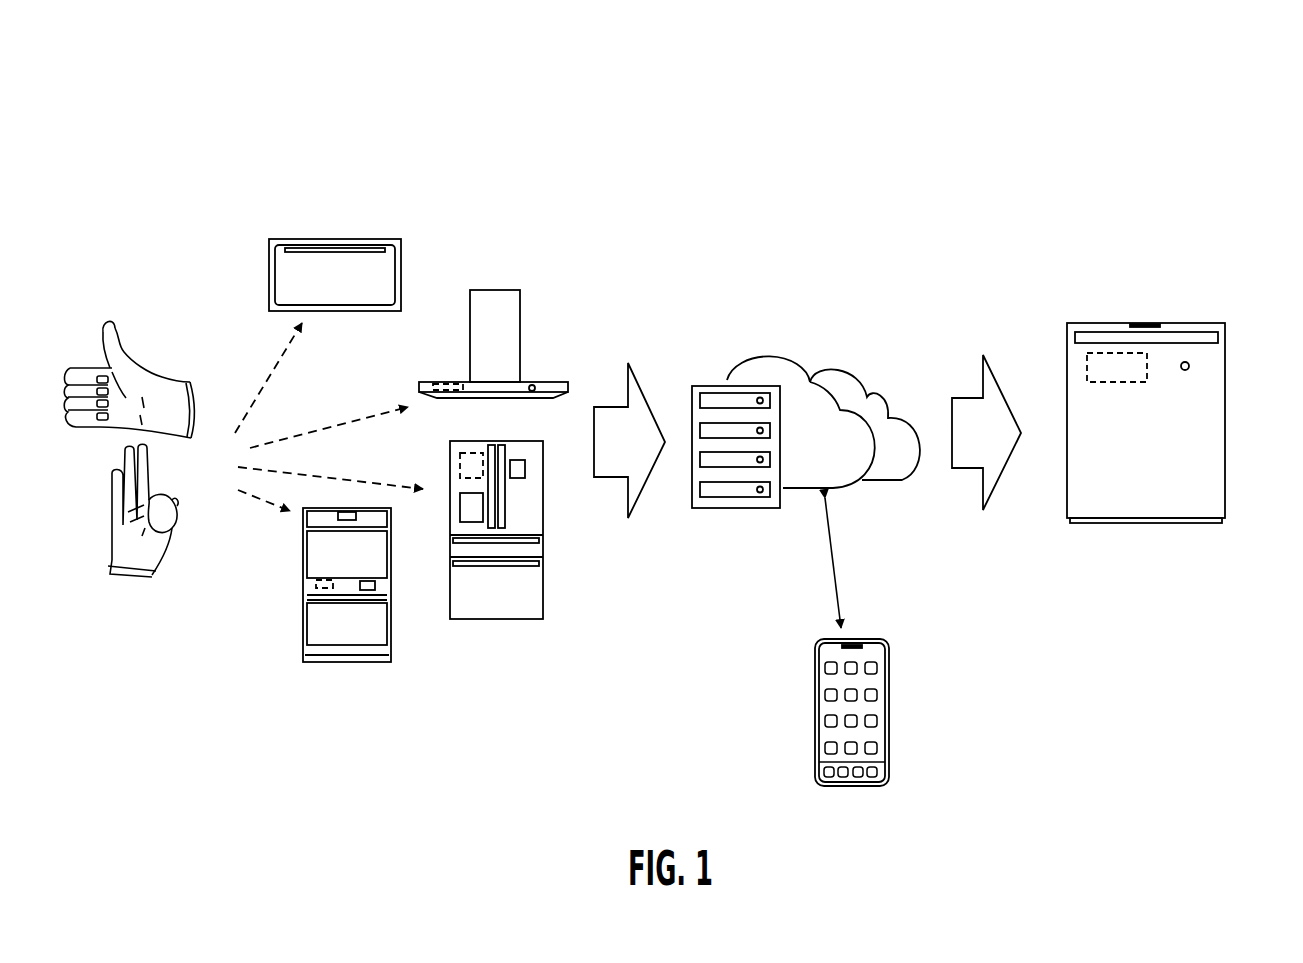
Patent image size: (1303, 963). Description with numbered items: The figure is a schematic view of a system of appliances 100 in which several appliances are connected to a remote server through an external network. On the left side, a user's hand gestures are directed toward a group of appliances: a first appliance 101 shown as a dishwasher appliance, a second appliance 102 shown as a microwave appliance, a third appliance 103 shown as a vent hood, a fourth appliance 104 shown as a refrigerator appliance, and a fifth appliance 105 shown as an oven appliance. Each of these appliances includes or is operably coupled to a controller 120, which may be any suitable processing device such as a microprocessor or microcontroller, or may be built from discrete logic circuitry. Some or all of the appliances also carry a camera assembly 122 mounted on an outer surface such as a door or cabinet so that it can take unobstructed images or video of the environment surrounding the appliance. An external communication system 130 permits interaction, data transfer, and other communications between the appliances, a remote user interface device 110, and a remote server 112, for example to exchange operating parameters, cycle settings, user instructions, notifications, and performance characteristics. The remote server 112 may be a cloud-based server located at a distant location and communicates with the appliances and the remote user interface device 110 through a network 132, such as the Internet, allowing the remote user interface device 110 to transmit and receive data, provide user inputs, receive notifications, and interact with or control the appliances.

The system of appliances 100 is at (937, 90).
The first appliance 101 is at (1183, 322).
The second appliance 102 is at (358, 238).
The third appliance 103 is at (496, 290).
The fourth appliance 104 is at (543, 613).
The fifth appliance 105 is at (369, 663).
The remote user interface device 110 is at (889, 715).
The remote server 112 is at (735, 508).
The controller 120 is at (447, 382).
The camera assembly 122 is at (535, 384).
The external communication system 130 is at (951, 262).
The network 132 is at (810, 382).